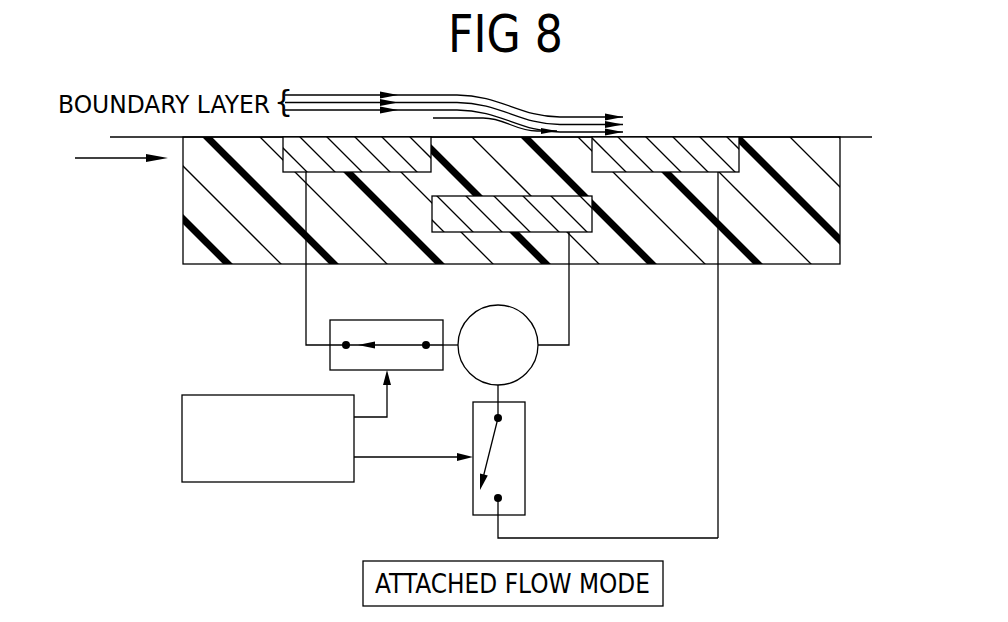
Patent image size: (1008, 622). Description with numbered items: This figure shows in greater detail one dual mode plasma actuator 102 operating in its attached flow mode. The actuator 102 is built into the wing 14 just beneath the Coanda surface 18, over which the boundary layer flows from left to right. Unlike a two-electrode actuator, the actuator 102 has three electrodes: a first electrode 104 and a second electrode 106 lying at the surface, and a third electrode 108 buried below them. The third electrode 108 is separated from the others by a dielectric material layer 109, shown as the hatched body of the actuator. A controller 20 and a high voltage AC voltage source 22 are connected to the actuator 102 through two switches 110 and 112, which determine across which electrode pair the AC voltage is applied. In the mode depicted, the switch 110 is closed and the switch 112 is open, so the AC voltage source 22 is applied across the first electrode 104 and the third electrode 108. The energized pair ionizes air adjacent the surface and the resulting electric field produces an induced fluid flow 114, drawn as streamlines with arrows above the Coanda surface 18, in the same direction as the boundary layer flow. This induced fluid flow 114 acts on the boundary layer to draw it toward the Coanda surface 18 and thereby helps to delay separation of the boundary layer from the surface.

The wing 14 is at (773, 255).
The Coanda surface 18 is at (858, 137).
The controller 20 is at (288, 470).
The AC voltage source 22 is at (537, 363).
The dual mode plasma actuator 102 is at (334, 555).
The first electrode 104 is at (305, 147).
The second electrode 106 is at (690, 148).
The third electrode 108 is at (584, 233).
The dielectric material layer 109 is at (272, 218).
The switch 110 is at (333, 359).
The switch 112 is at (513, 466).
The induced fluid flow 114 is at (482, 118).